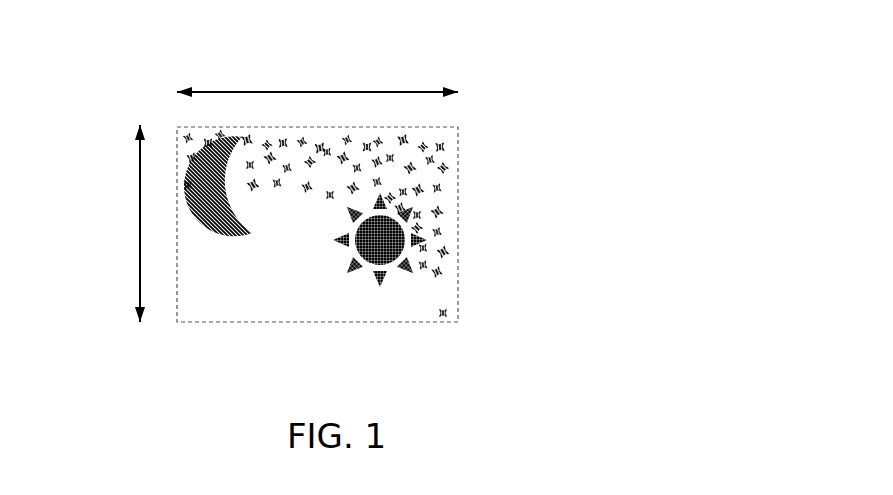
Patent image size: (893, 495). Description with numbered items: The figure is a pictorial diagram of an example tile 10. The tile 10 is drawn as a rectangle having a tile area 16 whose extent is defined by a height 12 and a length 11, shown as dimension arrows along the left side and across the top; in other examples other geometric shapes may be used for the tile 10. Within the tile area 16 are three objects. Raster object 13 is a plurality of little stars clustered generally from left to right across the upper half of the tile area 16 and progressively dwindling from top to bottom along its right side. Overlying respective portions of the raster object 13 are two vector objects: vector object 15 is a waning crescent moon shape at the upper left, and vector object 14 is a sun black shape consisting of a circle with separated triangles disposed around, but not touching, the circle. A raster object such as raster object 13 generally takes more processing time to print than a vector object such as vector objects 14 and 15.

The tile 10 is at (568, 100).
The length 11 is at (292, 92).
The height 12 is at (138, 217).
The raster object 13 is at (452, 155).
The vector object 14 is at (408, 270).
The vector object 15 is at (214, 232).
The tile area 16 is at (460, 285).